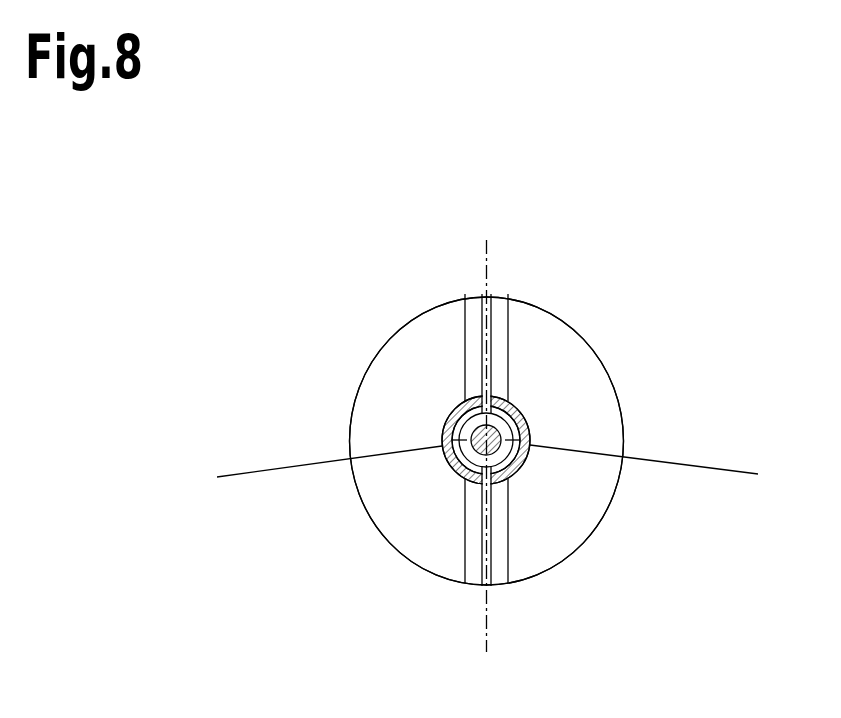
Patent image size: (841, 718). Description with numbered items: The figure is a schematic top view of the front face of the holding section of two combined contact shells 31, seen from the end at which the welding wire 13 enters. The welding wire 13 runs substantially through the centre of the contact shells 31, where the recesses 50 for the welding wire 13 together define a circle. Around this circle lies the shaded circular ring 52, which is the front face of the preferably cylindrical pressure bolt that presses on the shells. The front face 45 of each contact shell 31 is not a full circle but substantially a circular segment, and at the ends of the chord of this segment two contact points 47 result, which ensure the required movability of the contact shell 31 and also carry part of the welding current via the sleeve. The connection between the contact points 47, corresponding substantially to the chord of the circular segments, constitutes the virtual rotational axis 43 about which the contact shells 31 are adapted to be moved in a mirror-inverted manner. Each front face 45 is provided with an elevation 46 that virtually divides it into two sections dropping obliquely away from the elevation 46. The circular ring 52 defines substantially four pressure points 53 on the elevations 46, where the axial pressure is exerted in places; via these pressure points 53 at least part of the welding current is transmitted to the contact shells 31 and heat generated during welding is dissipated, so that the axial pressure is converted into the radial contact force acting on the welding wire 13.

The welding wire 13 is at (502, 430).
The contact shell 31 is at (322, 493).
The rotational axis 43 is at (487, 240).
The front face 45 is at (370, 435).
The elevation 46 is at (465, 351).
The contact point 47 is at (478, 280).
The recess 50 is at (483, 475).
The circular ring 52 is at (445, 430).
The pressure point 53 is at (456, 390).